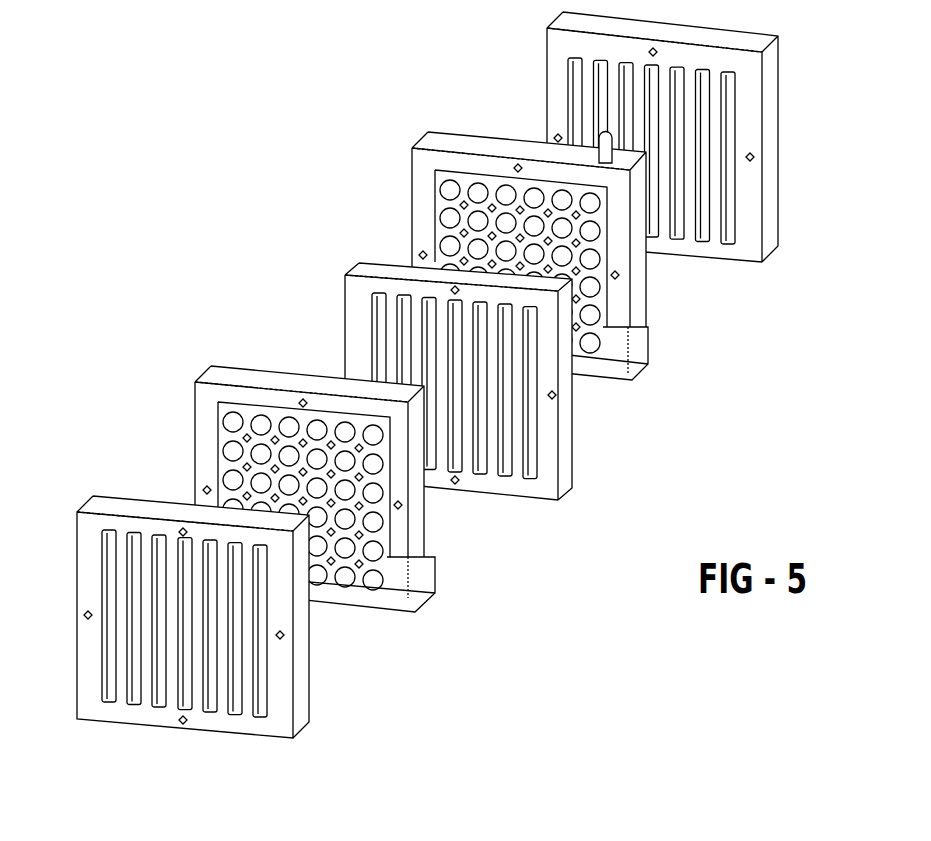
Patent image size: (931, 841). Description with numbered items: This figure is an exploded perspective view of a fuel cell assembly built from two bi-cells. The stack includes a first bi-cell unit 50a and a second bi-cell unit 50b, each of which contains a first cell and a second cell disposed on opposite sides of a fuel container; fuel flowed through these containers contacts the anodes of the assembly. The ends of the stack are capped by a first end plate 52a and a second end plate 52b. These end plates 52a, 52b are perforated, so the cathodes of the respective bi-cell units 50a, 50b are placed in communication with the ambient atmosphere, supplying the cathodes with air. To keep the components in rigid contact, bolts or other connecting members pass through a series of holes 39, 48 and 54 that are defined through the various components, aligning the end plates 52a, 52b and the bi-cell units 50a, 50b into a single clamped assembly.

The hole 39 is at (293, 657).
The hole 48 is at (455, 478).
The first bi-cell unit 50a is at (240, 375).
The second bi-cell unit 50b is at (452, 142).
The first end plate 52a is at (87, 560).
The second end plate 52b is at (732, 128).
The hole 54 is at (655, 245).